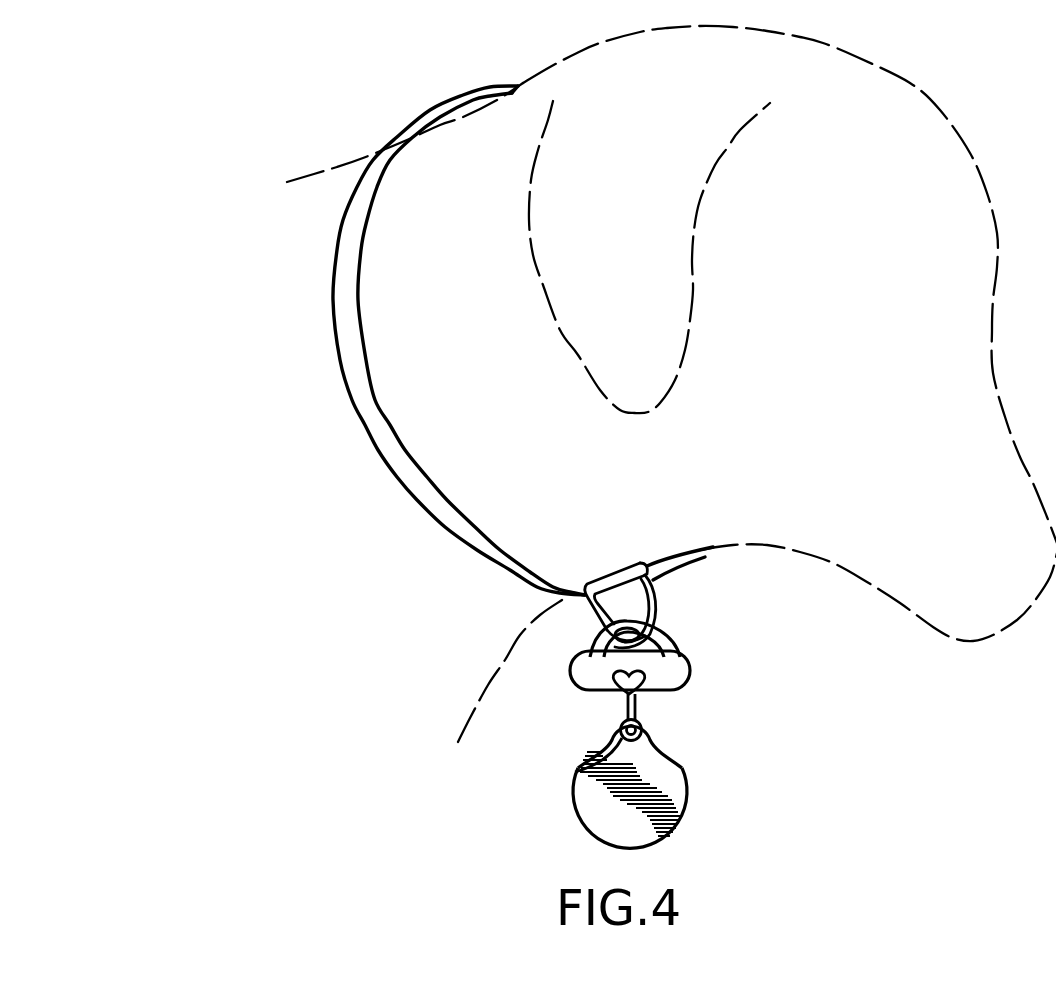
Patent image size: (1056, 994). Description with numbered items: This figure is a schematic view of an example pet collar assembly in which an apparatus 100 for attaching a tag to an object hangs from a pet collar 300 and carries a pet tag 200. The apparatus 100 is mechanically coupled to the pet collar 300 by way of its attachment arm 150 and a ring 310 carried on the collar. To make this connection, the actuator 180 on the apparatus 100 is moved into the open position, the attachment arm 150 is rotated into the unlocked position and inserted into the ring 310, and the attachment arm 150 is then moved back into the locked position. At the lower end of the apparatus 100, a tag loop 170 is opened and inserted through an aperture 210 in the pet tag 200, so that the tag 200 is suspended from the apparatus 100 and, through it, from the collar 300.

The pet collar 300 is at (356, 386).
The ring 310 is at (618, 575).
The attachment arm 150 is at (668, 636).
The apparatus for attaching a tag to an object 100 is at (690, 668).
The actuator 180 is at (640, 700).
The tag loop 170 is at (626, 707).
The pet tag 200 is at (690, 792).
The aperture 210 is at (578, 771).